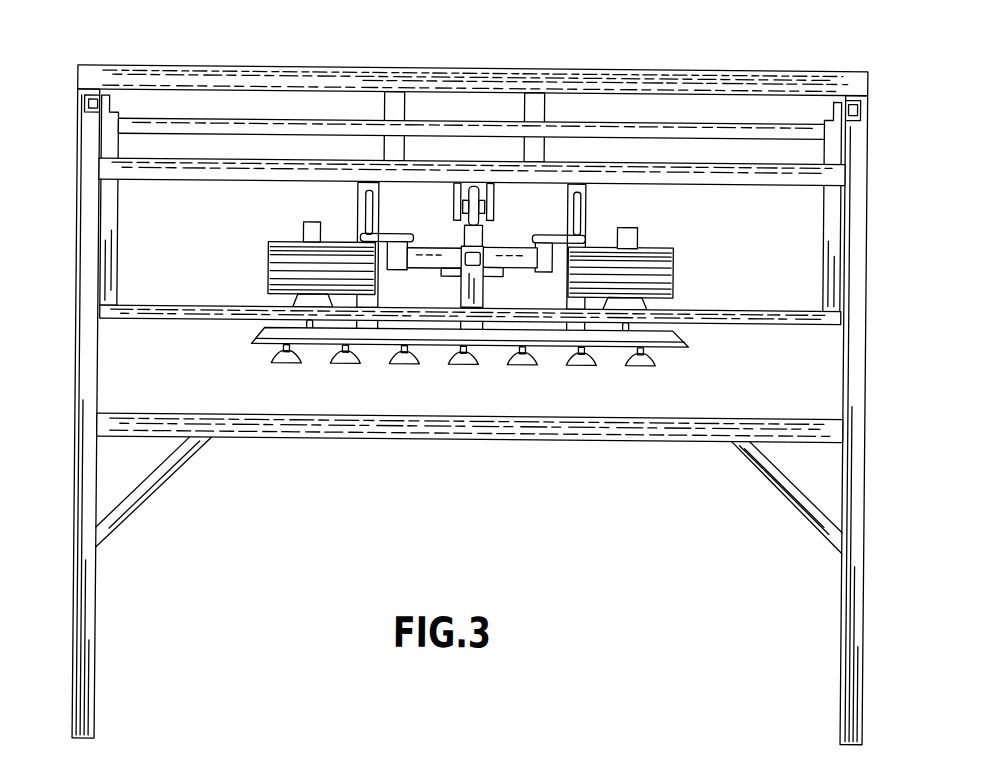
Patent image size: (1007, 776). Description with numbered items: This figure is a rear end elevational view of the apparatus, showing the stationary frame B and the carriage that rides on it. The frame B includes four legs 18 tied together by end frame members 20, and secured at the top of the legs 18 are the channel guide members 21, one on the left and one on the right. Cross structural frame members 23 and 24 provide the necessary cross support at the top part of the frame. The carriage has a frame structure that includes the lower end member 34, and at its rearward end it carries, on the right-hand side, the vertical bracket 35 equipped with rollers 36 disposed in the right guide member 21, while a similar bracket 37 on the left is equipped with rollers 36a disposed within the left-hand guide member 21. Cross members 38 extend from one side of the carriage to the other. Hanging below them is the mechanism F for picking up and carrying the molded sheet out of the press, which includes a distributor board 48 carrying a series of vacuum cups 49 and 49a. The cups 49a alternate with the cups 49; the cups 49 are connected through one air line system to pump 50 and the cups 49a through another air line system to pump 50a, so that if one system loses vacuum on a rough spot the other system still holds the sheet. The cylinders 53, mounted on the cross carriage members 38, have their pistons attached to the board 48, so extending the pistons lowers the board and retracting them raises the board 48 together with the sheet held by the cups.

The legs 18 is at (97, 602).
The end frame members 20 is at (378, 437).
The channel guide members 21 is at (80, 110).
The cross structural frame member 23 is at (702, 76).
The cross structural frame member 24 is at (717, 176).
The lower end member 34 is at (120, 320).
The vertical bracket 35 is at (822, 261).
The rollers 36 is at (849, 94).
The rollers 36a is at (91, 95).
The bracket 37 is at (117, 248).
The cross members 38 is at (236, 121).
The distributor board 48 is at (686, 344).
The vacuum cups 49 is at (291, 361).
The vacuum cups 49a is at (349, 361).
The pump 50 is at (266, 281).
The pump 50a is at (660, 277).
The cylinders 53 is at (301, 233).
The mechanism for picking up and carrying the molded sheets F is at (247, 332).
The frame B is at (571, 440).